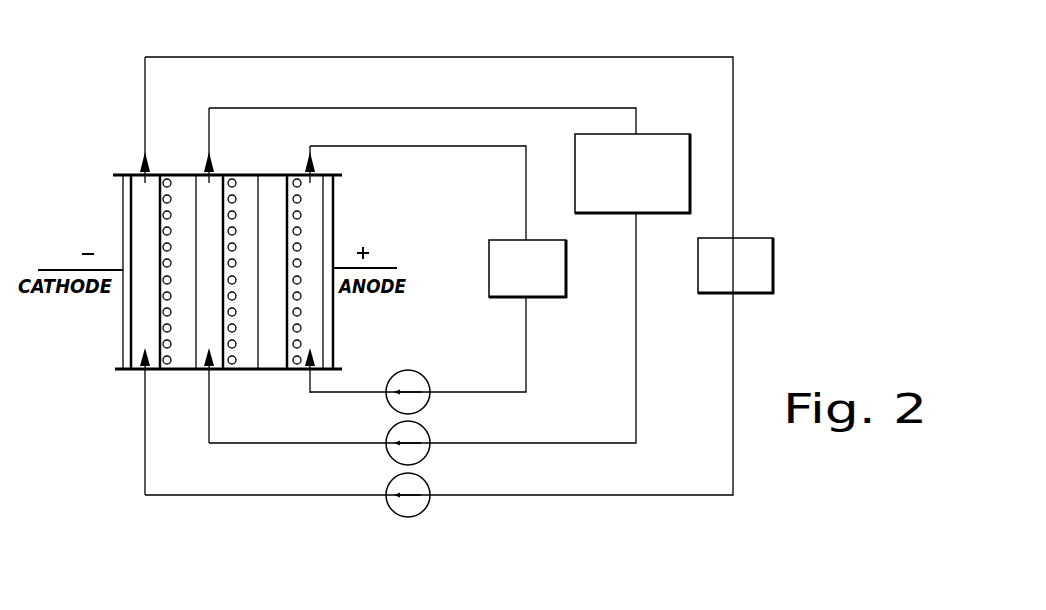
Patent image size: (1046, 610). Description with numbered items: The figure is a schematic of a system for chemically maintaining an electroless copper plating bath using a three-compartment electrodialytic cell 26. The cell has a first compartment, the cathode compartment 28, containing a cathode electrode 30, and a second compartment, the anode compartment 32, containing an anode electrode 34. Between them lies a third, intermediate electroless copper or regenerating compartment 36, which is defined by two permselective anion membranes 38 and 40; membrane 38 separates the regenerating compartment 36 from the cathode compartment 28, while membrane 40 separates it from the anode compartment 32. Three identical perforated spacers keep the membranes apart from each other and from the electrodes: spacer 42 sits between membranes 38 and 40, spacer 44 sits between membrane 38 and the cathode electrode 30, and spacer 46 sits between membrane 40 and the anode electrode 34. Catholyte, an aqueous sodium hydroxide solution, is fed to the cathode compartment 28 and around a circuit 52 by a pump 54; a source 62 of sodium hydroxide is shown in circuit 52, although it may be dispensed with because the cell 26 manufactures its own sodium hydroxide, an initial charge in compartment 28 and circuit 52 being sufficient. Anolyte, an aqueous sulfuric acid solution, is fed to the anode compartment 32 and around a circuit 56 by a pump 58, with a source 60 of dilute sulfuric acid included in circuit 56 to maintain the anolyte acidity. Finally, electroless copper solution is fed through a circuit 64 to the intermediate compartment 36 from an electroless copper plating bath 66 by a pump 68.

The three-compartment electrodialytic cell 26 is at (122, 112).
The cathode compartment 28 is at (139, 357).
The cathode electrode 30 is at (123, 336).
The anode compartment 32 is at (313, 332).
The anode electrode 34 is at (334, 314).
The intermediate electroless copper compartment 36 is at (203, 356).
The permselective anion membrane 38 is at (195, 210).
The permselective anion membrane 40 is at (259, 212).
The spacer 42 is at (236, 253).
The spacer 44 is at (159, 219).
The spacer 46 is at (333, 271).
The catholyte circuit 52 is at (143, 478).
The pump 54 is at (428, 483).
The anolyte circuit 56 is at (307, 389).
The pump 58 is at (424, 375).
The source of dilute sulfuric acid 60 is at (500, 240).
The source of sodium hydroxide 62 is at (712, 296).
The electroless copper circuit 64 is at (207, 429).
The electroless copper plating bath 66 is at (650, 133).
The pump 68 is at (428, 432).